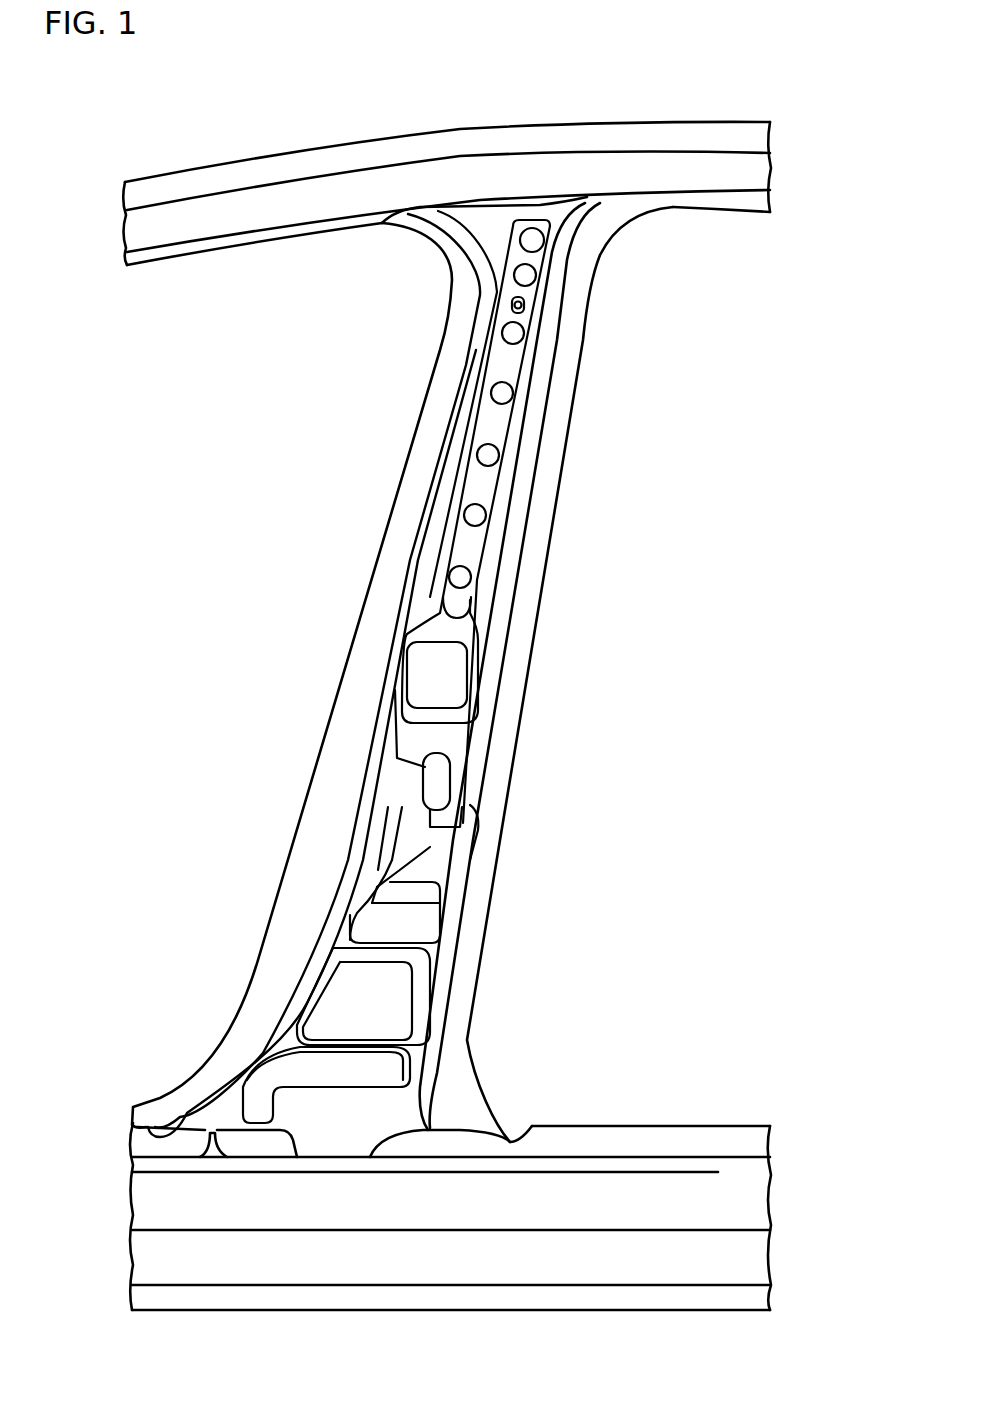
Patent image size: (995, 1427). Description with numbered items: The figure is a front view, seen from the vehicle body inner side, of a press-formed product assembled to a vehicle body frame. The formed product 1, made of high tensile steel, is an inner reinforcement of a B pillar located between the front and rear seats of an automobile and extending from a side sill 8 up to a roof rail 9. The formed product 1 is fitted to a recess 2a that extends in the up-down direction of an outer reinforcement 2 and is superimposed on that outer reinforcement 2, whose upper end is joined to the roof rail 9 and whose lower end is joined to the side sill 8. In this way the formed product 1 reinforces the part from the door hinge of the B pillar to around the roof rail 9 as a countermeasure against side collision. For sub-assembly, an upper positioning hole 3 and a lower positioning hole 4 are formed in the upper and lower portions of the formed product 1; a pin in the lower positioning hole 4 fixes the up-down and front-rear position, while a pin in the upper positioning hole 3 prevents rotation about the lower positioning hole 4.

The formed product 1 is at (408, 604).
The outer reinforcement 2 is at (537, 634).
The recess 2a is at (455, 440).
The upper positioning hole 3 is at (524, 304).
The lower positioning hole 4 is at (424, 656).
The side sill 8 is at (633, 1126).
The roof rail 9 is at (212, 253).